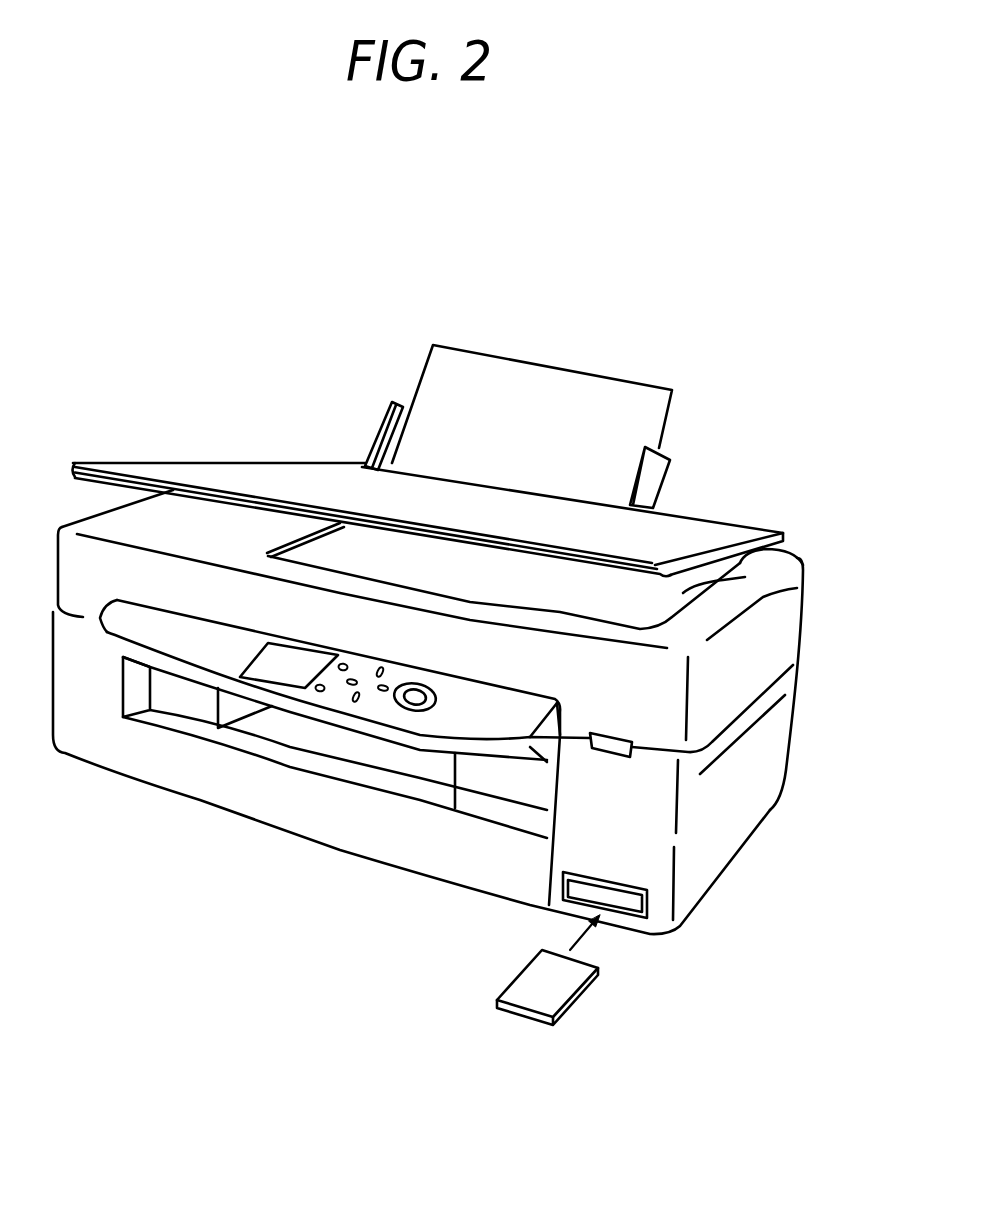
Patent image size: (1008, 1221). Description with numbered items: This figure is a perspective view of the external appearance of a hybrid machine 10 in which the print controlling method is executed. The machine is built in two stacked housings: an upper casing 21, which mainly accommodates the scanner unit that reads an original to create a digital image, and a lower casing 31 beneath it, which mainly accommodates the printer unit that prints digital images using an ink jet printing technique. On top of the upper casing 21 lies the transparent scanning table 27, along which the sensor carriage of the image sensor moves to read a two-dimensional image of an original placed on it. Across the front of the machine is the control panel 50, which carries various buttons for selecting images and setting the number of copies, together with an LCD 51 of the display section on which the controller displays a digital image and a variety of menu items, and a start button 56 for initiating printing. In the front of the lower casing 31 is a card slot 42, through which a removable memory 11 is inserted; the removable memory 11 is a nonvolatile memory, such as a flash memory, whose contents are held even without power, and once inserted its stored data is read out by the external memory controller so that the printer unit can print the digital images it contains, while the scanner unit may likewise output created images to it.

The hybrid machine 10 is at (246, 421).
The transparent scanning table 27 is at (787, 578).
The upper casing 21 is at (772, 630).
The lower casing 31 is at (768, 754).
The control panel 50 is at (345, 712).
The LCD 51 is at (254, 661).
The start button 56 is at (423, 712).
The card slot 42 is at (634, 902).
The removable memory 11 is at (555, 990).